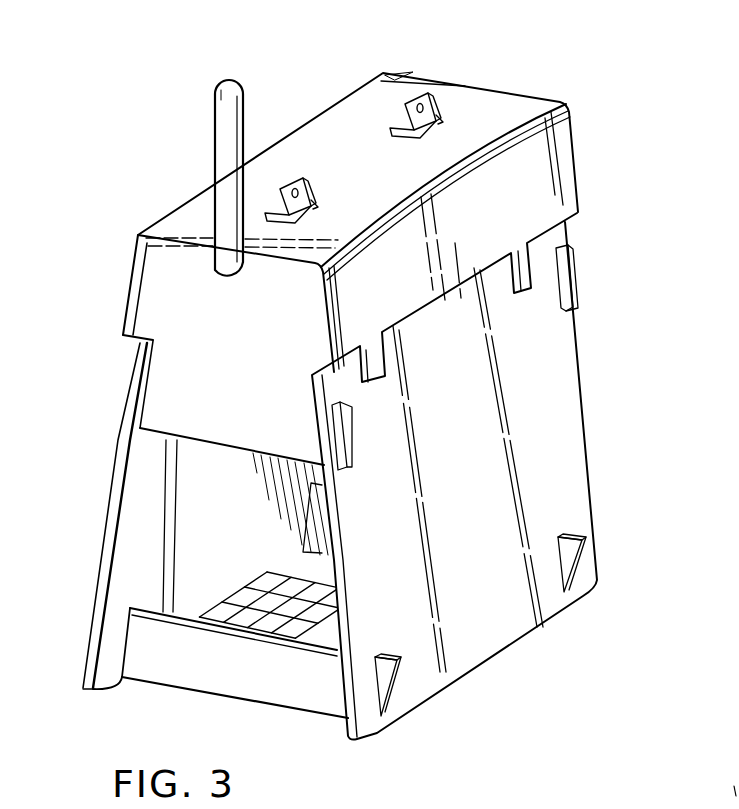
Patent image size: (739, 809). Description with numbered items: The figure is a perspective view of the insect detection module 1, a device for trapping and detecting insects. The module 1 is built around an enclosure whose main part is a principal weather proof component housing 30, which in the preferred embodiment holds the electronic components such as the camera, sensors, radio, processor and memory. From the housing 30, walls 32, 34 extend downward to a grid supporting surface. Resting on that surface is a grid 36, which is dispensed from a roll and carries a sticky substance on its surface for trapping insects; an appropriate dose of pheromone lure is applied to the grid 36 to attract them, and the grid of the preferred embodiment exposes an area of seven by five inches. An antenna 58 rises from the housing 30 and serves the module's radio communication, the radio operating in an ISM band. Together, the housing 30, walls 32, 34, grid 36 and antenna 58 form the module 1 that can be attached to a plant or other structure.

The insect detection module 1 is at (606, 124).
The principal weather proof component housing 30 is at (501, 102).
The wall 32 is at (557, 418).
The wall 34 is at (118, 503).
The grid 36 is at (237, 604).
The antenna 58 is at (225, 197).